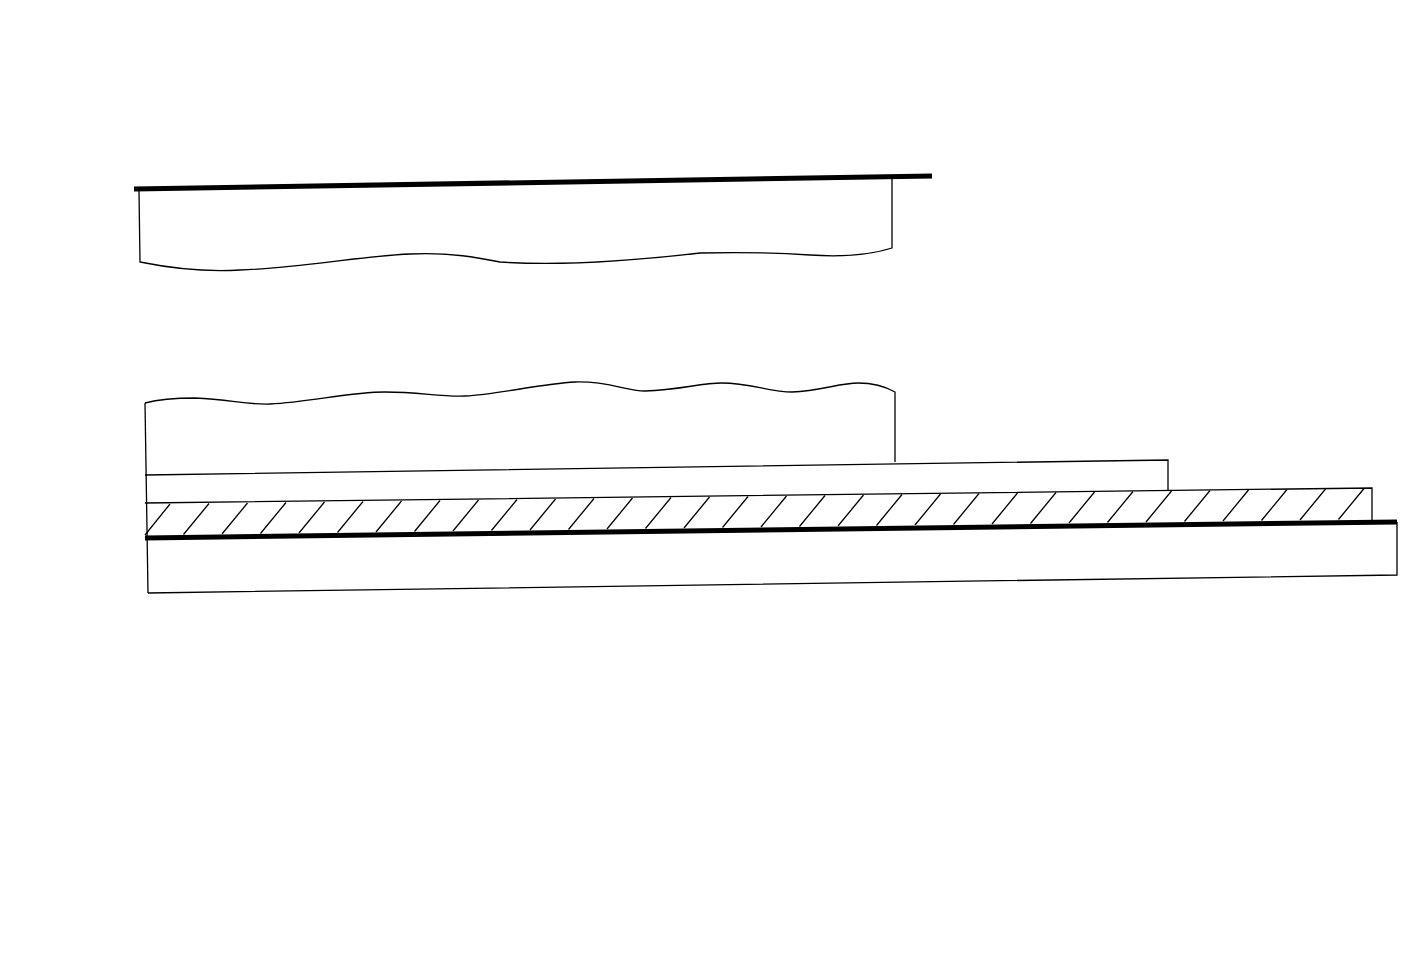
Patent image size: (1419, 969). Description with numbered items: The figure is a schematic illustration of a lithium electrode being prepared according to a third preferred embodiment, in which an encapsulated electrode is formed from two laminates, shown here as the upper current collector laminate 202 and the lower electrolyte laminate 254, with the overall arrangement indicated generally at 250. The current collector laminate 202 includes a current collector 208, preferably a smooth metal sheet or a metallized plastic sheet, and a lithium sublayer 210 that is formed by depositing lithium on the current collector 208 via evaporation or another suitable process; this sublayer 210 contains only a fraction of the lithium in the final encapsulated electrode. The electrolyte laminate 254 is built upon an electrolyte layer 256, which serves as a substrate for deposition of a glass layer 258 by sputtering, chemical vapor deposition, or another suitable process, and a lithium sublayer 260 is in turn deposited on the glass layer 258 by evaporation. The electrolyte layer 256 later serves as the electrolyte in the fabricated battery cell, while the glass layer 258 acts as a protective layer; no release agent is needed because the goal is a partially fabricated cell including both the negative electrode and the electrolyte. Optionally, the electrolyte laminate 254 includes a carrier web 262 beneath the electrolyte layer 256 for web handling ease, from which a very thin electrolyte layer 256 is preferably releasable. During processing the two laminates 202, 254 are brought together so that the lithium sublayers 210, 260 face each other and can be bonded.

The current collector laminate 202 is at (515, 203).
The current collector 208 is at (820, 175).
The lithium sublayer 210 is at (860, 240).
The encapsulated lithium electrode assembly 250 is at (975, 115).
The electrolyte laminate 254 is at (742, 496).
The electrolyte layer 256 is at (1213, 497).
The glass layer 258 is at (1060, 468).
The lithium sublayer 260 is at (887, 432).
The carrier web 262 is at (1192, 567).